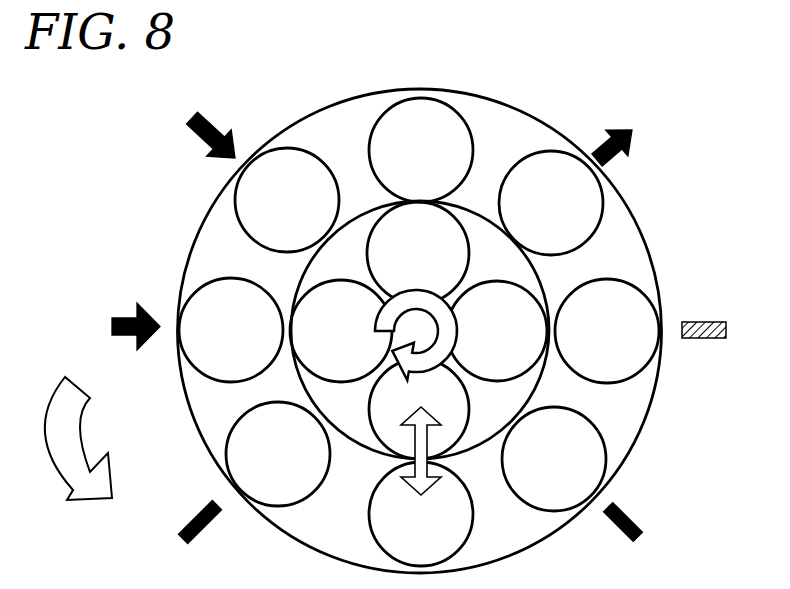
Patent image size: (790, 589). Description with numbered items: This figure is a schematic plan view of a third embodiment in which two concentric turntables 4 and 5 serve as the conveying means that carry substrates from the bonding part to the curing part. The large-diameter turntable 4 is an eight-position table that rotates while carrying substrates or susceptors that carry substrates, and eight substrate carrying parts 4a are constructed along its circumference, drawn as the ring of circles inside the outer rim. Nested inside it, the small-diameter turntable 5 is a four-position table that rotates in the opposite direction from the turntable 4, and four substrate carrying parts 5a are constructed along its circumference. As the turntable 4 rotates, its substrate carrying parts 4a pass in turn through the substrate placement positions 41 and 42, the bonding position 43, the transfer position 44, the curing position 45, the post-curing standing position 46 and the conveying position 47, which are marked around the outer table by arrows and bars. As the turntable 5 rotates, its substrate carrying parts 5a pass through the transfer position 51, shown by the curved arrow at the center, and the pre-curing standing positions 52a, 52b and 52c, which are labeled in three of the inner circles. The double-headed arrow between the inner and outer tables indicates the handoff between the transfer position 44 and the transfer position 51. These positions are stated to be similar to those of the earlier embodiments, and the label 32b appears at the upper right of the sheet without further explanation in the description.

The turntable 4 is at (500, 123).
The substrate carrying part 4a is at (410, 120).
The turntable 5 is at (527, 275).
The substrate carrying part 5a is at (517, 362).
The processing chamber 32b is at (593, 15).
The substrate placement position 41 is at (197, 125).
The substrate placement position 42 is at (113, 326).
The bonding position 43 is at (186, 539).
The transfer position 44 is at (422, 470).
The curing position 45 is at (636, 540).
The post-curing standing position 46 is at (726, 334).
The conveying position 47 is at (626, 133).
The transfer position 51 is at (409, 378).
The pre-curing standing position 52a is at (341, 331).
The pre-curing standing position 52b is at (418, 253).
The pre-curing standing position 52c is at (497, 331).